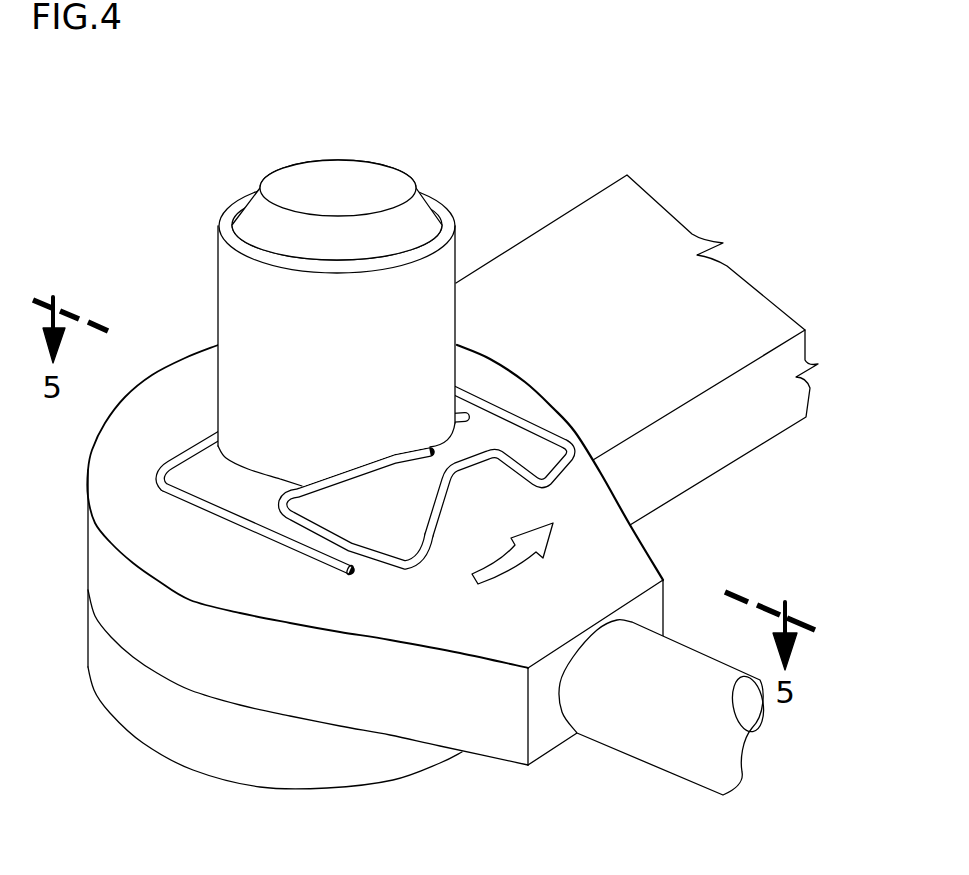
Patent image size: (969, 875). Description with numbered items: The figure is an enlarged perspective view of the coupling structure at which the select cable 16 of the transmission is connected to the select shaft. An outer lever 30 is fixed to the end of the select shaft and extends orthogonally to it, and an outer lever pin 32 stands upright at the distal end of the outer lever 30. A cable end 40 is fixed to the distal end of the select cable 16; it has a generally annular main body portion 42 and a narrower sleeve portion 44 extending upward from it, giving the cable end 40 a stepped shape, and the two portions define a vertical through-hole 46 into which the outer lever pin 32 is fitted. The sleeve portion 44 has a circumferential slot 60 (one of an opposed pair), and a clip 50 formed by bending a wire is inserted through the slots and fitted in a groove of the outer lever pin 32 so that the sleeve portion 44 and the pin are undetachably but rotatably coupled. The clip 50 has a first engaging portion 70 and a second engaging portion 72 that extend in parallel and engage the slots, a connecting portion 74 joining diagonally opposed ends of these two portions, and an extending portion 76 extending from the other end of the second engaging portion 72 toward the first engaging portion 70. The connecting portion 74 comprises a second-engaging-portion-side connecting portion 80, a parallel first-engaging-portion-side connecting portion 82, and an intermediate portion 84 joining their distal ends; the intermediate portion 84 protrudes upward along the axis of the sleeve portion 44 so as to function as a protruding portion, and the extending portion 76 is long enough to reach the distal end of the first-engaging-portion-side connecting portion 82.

The select cable 16 is at (665, 747).
The outer lever 30 is at (594, 223).
The outer lever pin 32 is at (352, 168).
The cable end 40 is at (260, 290).
The main body portion 42 is at (170, 393).
The sleeve portion 44 is at (235, 264).
The through-hole 46 is at (241, 230).
The clip 50 is at (277, 583).
The slot 60 is at (474, 398).
The first engaging portion 70 is at (404, 511).
The second engaging portion 72 is at (182, 454).
The connecting portion 74 is at (534, 491).
The extending portion 76 is at (245, 519).
The second-engaging-portion-side connecting portion 80 is at (548, 430).
The first-engaging-portion-side connecting portion 82 is at (363, 550).
The intermediate portion 84 is at (477, 462).